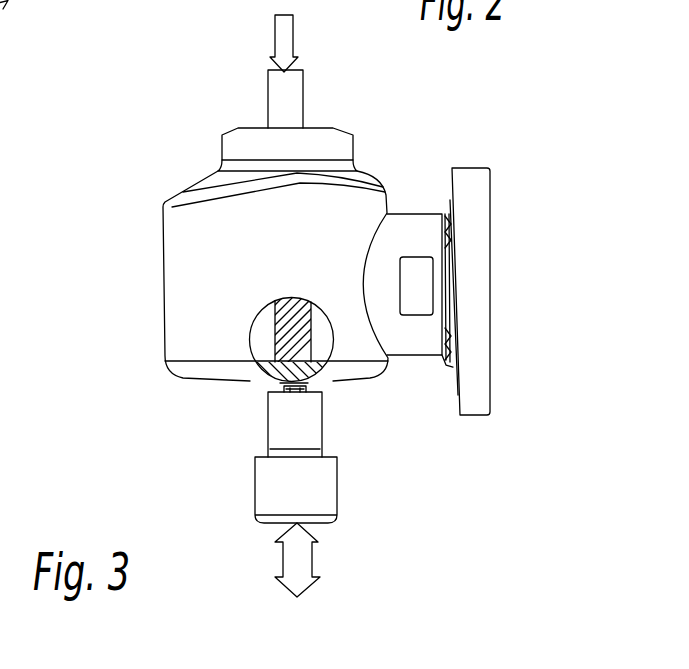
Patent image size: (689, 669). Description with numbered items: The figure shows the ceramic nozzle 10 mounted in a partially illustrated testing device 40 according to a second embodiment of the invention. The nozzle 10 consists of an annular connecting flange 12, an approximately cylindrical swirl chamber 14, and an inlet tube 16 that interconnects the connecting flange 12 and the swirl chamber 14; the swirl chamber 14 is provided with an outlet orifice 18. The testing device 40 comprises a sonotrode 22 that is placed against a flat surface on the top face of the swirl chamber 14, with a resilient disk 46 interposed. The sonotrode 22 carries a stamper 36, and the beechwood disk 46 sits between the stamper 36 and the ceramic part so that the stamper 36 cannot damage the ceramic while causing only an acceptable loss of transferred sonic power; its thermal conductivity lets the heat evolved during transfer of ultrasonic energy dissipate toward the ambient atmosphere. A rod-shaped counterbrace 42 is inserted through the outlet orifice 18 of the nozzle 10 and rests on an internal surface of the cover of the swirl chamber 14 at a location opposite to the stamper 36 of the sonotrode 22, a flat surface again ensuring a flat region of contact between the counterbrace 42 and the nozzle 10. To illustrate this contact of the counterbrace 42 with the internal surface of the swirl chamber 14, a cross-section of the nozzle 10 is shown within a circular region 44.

The nozzle 10 is at (381, 159).
The connecting flange 12 is at (482, 310).
The swirl chamber 14 is at (177, 285).
The inlet tube 16 is at (416, 342).
The outlet orifice 18 is at (256, 116).
The sonotrode 22 is at (267, 472).
The stamper 36 is at (308, 385).
The testing device 40 is at (217, 76).
The counterbrace 42 is at (293, 100).
The circular region 44 is at (250, 337).
The disk 46 is at (283, 384).